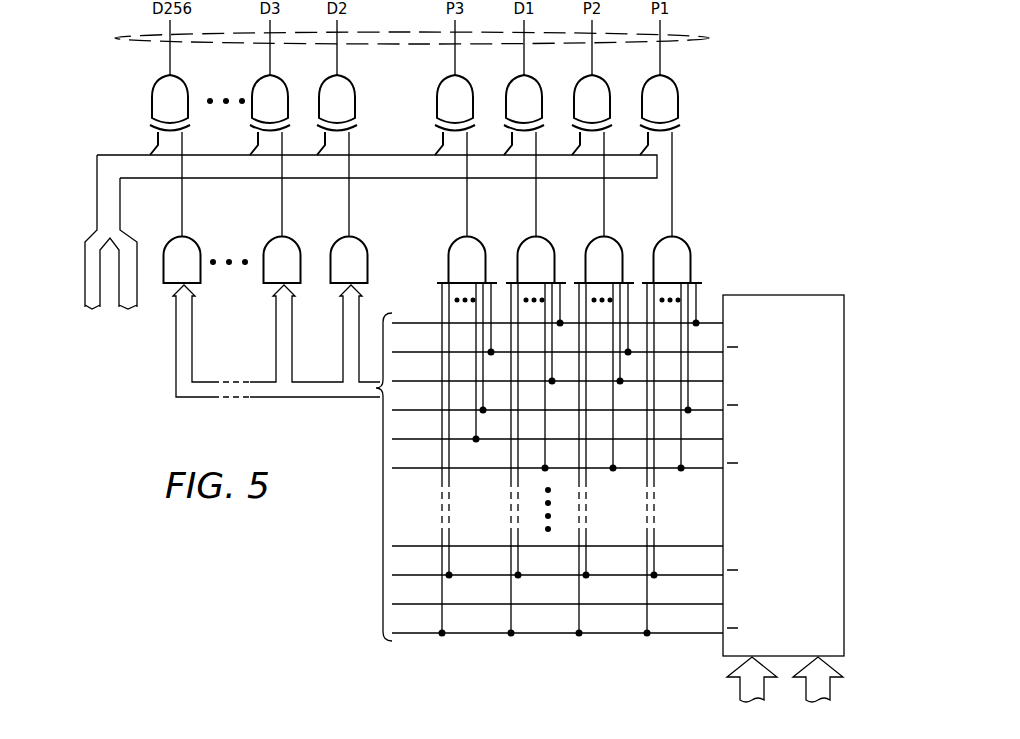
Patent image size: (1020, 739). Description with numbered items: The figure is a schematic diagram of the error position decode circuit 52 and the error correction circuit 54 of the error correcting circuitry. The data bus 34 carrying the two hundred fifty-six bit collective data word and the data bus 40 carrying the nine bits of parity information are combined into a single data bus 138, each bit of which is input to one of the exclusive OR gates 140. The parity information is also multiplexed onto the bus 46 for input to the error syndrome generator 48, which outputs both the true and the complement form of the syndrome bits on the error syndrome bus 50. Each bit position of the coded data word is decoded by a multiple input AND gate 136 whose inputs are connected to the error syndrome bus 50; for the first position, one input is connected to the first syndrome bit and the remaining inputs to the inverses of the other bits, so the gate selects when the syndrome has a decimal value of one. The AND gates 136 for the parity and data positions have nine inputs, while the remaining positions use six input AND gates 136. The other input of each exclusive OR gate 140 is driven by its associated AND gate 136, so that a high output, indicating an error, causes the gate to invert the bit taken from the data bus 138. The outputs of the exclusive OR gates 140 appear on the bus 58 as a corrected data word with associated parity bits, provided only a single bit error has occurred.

The data bus 34 is at (735, 688).
The data bus 40 is at (130, 310).
The bus 46 is at (803, 690).
The error syndrome generator 48 is at (801, 617).
The error syndrome bus 50 is at (305, 395).
The error position decode circuit 52 is at (357, 463).
The error correction circuit 54 is at (722, 167).
The bus 58 is at (709, 37).
The AND gate 136 is at (606, 243).
The data bus 138 is at (372, 157).
The exclusive OR gate 140 is at (594, 92).